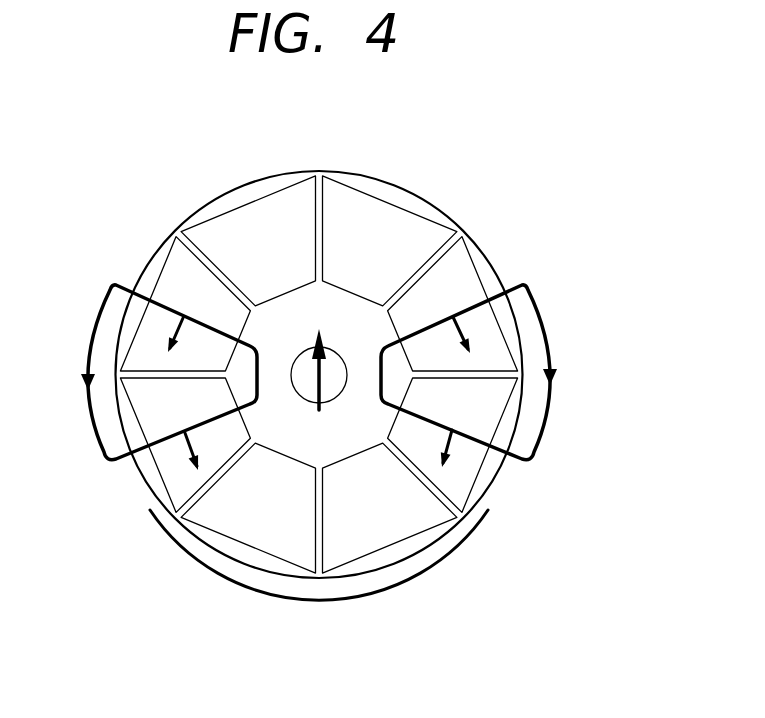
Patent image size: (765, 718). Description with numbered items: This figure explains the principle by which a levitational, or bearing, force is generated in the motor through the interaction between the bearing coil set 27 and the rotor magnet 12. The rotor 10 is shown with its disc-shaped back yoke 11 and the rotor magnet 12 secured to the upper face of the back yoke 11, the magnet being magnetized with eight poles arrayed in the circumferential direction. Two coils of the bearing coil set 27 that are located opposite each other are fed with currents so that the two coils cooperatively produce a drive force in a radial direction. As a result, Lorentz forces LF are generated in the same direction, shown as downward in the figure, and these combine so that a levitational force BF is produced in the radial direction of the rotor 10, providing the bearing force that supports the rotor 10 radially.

The rotor 10 is at (460, 197).
The back yoke 11 is at (393, 555).
The rotor magnet 12 is at (445, 537).
The bearing coil set 27 is at (90, 335).
The levitational force BF is at (325, 342).
The Lorentz forces LF is at (446, 465).